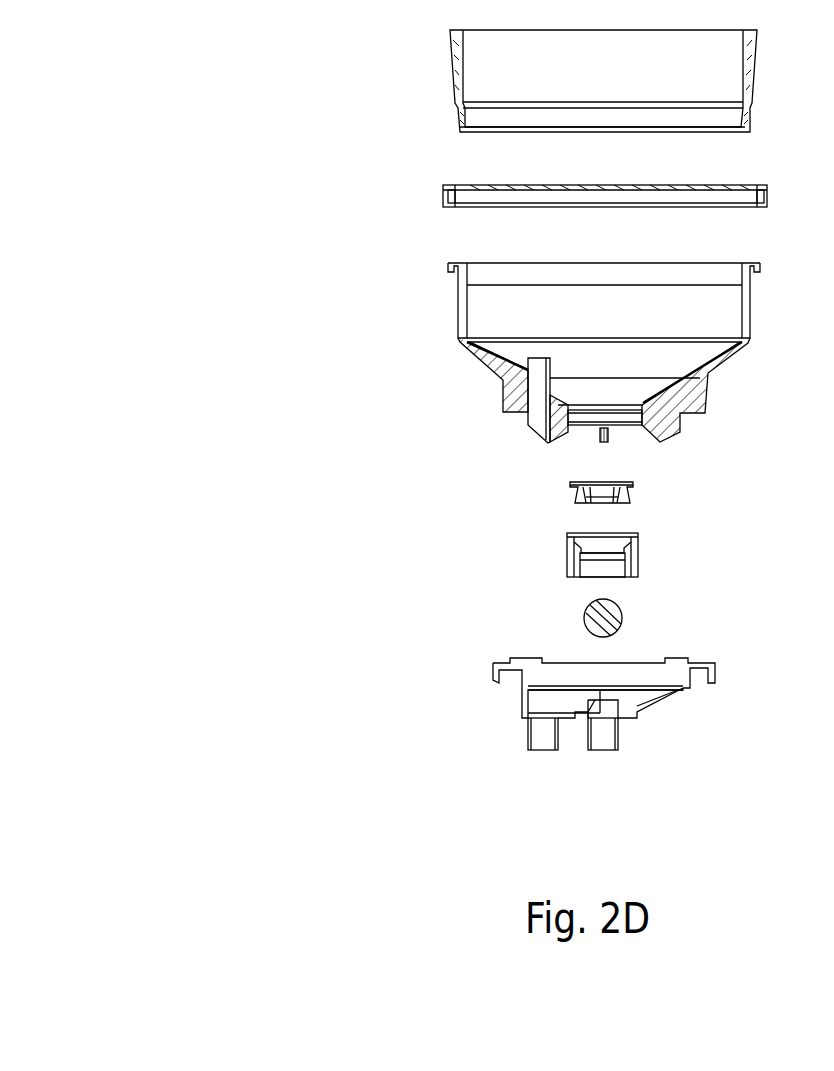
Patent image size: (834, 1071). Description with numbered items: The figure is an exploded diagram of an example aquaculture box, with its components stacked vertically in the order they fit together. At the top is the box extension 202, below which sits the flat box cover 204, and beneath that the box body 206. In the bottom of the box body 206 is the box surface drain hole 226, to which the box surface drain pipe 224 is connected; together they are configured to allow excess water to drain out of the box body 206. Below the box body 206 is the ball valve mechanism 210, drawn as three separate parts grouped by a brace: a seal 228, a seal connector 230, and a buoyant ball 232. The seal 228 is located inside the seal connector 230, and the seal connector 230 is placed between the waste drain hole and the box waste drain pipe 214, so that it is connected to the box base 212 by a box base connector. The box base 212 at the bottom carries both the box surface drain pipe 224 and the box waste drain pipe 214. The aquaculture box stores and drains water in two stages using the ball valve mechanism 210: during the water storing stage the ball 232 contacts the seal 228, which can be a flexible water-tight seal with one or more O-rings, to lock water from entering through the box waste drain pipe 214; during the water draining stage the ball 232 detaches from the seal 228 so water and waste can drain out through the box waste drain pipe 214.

The box extension 202 is at (508, 73).
The box cover 204 is at (528, 199).
The box body 206 is at (535, 307).
The box surface drain hole 226 is at (540, 361).
The ball valve mechanism 210 is at (305, 612).
The seal 228 is at (577, 488).
The seal connector 230 is at (600, 555).
The buoyant ball 232 is at (585, 617).
The box base 212 is at (583, 680).
The box surface drain pipe 224 is at (537, 740).
The box waste drain pipe 214 is at (605, 738).